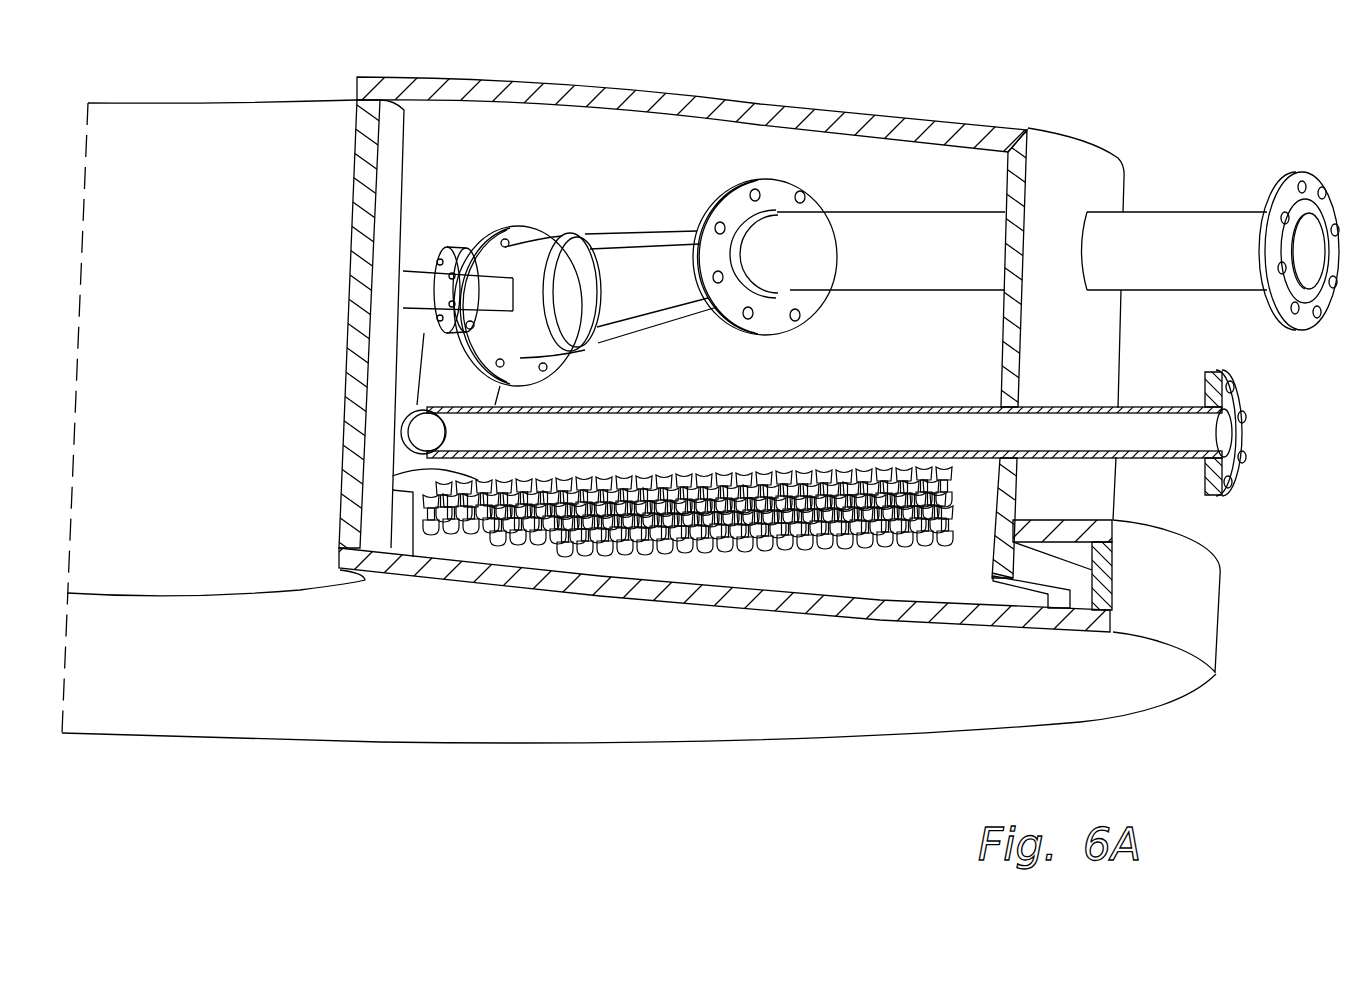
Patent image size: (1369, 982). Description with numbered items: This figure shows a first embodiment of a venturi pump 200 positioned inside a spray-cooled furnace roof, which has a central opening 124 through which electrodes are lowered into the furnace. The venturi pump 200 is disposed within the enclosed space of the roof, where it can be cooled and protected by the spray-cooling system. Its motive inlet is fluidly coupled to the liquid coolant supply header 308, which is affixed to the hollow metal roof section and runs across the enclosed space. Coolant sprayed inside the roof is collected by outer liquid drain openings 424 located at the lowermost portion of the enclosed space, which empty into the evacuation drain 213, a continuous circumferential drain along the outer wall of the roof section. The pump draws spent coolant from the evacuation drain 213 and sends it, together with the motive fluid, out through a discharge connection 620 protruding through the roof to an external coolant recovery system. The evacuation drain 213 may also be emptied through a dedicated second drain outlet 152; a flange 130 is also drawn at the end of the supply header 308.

The central opening 124 is at (202, 132).
The second drain outlet 152 is at (1300, 175).
The venturi pump 200 is at (601, 226).
The discharge connection 620 is at (921, 291).
The liquid coolant supply header 308 is at (406, 412).
The manifold flange 130 is at (1246, 434).
The outer liquid drain openings 424 is at (1028, 597).
The evacuation drain 213 is at (1078, 575).